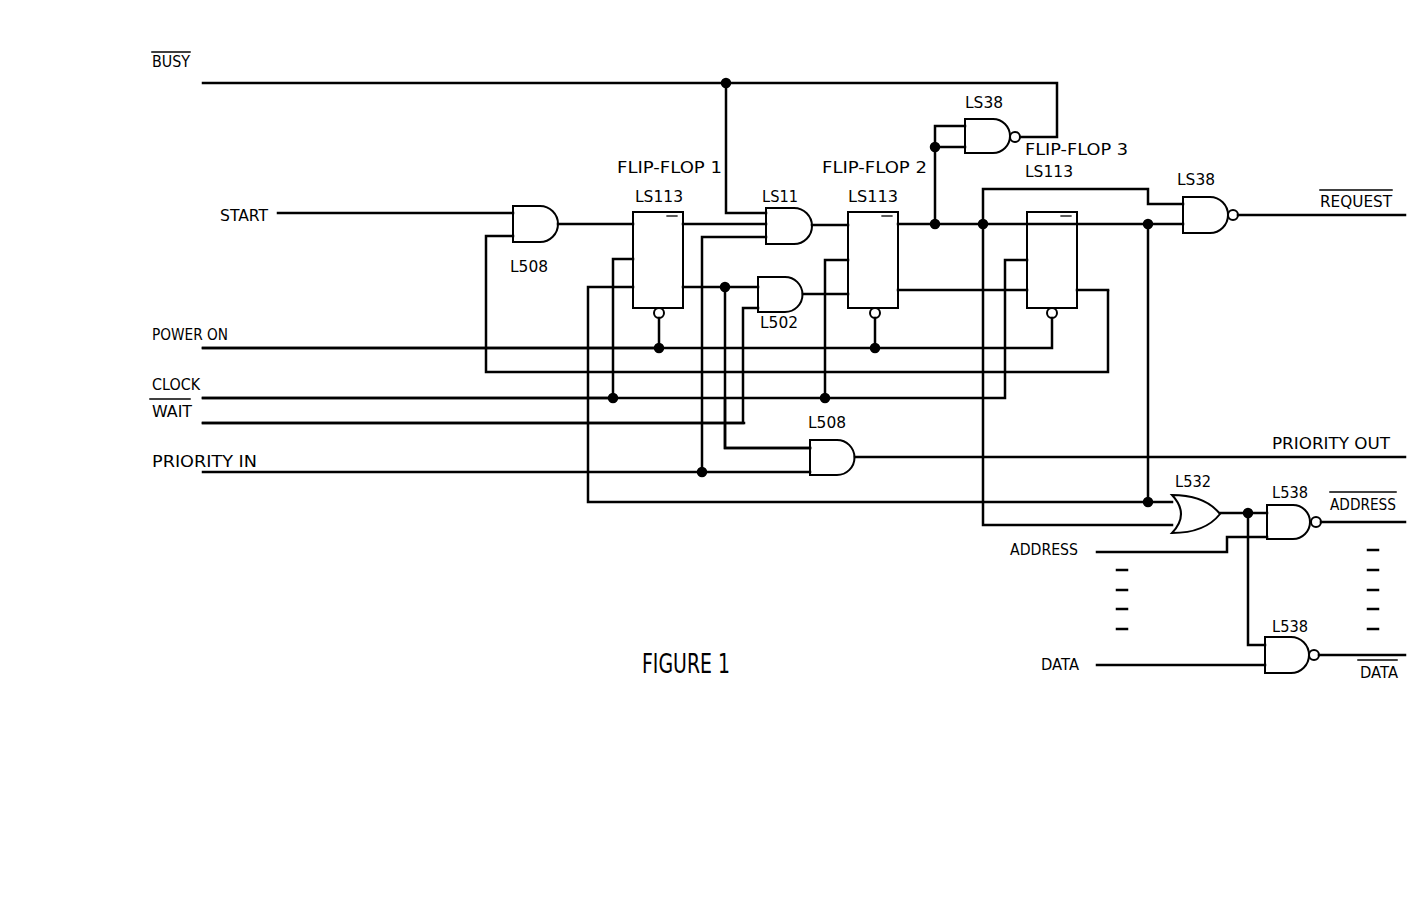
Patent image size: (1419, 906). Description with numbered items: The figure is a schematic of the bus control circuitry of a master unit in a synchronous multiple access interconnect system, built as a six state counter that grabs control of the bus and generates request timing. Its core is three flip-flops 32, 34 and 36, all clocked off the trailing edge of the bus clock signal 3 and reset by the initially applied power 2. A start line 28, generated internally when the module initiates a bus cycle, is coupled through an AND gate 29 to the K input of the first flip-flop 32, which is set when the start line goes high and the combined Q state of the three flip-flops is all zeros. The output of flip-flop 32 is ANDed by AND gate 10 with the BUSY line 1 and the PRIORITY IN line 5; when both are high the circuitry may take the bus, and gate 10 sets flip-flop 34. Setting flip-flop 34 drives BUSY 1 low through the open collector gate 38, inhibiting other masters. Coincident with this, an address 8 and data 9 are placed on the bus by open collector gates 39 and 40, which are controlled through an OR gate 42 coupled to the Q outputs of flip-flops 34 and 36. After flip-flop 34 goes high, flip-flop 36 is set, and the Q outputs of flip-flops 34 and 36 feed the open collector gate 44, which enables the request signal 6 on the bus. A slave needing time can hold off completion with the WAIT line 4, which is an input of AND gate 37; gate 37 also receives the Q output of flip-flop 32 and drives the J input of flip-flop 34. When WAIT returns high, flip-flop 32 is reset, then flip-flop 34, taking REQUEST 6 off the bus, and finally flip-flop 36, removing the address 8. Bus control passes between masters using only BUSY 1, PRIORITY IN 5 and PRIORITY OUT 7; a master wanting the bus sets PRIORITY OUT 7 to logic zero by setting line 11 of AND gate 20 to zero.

The BUSY line 1 is at (323, 83).
The power 2 is at (324, 348).
The bus clock signal 3 is at (324, 398).
The WAIT line 4 is at (331, 423).
The PRIORITY IN line 5 is at (331, 472).
The request signal 6 is at (1274, 215).
The PRIORITY OUT line 7 is at (928, 443).
The address 8 is at (1097, 552).
The data 9 is at (1097, 665).
The AND gate 10 is at (807, 211).
The line of AND gate 20 11 is at (797, 448).
The AND gate 20 is at (855, 442).
The start line 28 is at (335, 213).
The AND gate 29 is at (521, 206).
The flip-flop 32 is at (633, 212).
The flip-flop 34 is at (908, 256).
The flip-flop 36 is at (1086, 255).
The AND gate 37 is at (763, 277).
The open collector gate 38 is at (996, 153).
The open collector gate 39 is at (1306, 539).
The open collector gate 40 is at (1303, 673).
The OR gate 42 is at (1213, 498).
The open collector gate 44 is at (1199, 233).